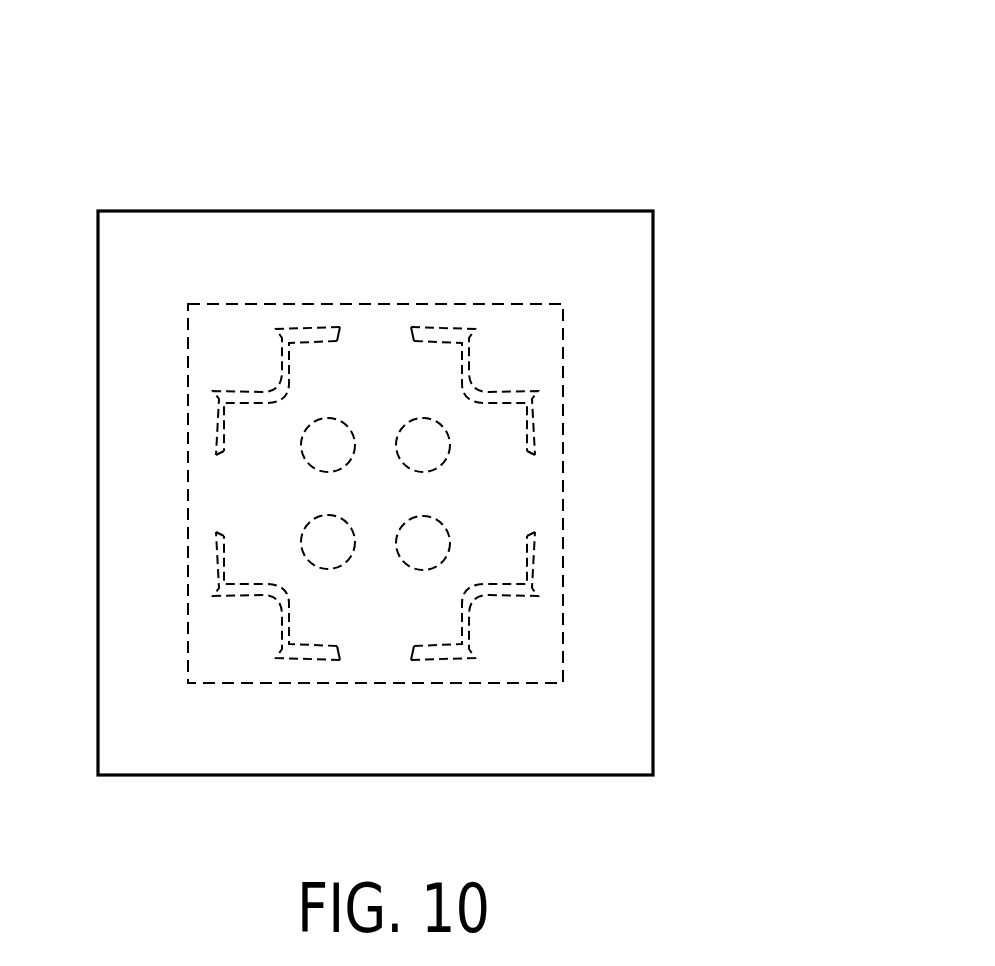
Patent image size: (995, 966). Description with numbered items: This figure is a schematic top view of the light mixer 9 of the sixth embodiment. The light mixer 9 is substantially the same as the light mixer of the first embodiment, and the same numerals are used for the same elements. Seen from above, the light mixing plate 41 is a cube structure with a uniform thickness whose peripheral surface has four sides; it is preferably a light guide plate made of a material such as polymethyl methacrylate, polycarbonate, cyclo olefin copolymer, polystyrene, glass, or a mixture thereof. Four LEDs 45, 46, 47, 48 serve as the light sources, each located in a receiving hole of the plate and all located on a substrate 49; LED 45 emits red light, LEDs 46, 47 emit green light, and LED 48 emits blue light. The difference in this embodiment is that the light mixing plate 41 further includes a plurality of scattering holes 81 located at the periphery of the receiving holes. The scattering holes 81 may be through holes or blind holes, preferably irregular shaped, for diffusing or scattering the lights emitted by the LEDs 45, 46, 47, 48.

The light mixer 9 is at (763, 145).
The light mixing plate 41 is at (574, 232).
The LED 45 is at (325, 440).
The LED 46 is at (417, 447).
The LED 47 is at (317, 540).
The LED 48 is at (417, 545).
The substrate 49 is at (563, 630).
The scattering holes 81 is at (537, 557).